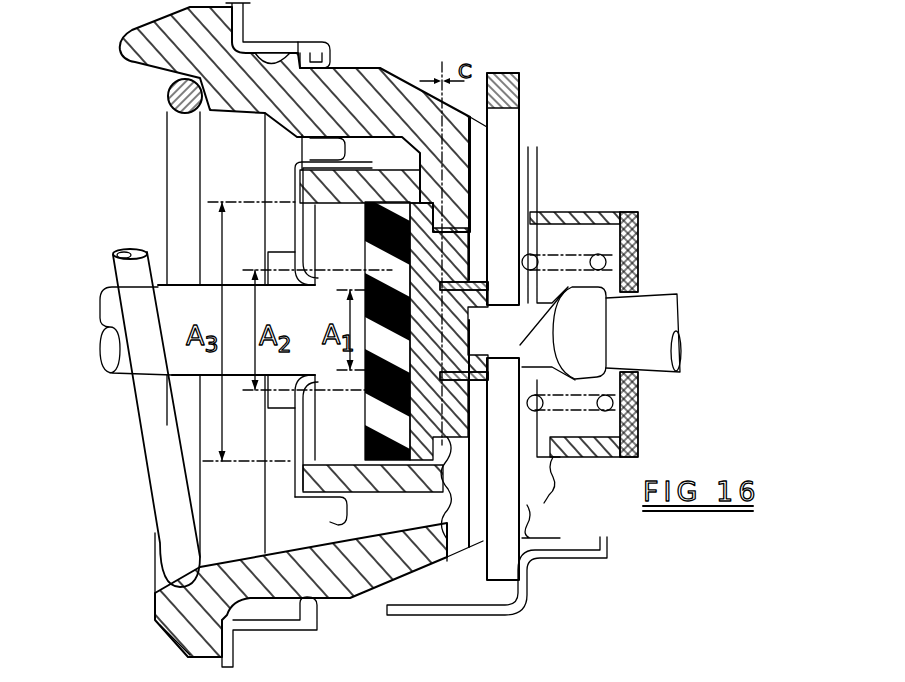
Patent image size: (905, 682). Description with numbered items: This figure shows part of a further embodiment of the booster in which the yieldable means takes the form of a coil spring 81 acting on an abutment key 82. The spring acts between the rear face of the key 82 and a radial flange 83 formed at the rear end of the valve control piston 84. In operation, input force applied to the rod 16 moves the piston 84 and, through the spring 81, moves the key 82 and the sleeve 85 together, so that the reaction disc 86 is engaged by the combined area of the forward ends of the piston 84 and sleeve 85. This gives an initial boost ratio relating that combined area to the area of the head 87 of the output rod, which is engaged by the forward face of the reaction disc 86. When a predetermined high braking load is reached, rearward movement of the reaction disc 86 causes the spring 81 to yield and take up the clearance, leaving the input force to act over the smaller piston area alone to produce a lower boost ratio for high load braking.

The rod 16 is at (651, 352).
The coil spring 81 is at (611, 266).
The abutment key 82 is at (510, 125).
The radial flange 83 is at (632, 212).
The valve control piston 84 is at (556, 214).
The sleeve 85 is at (470, 292).
The reaction disc 86 is at (382, 230).
The head of the output rod 87 is at (297, 498).